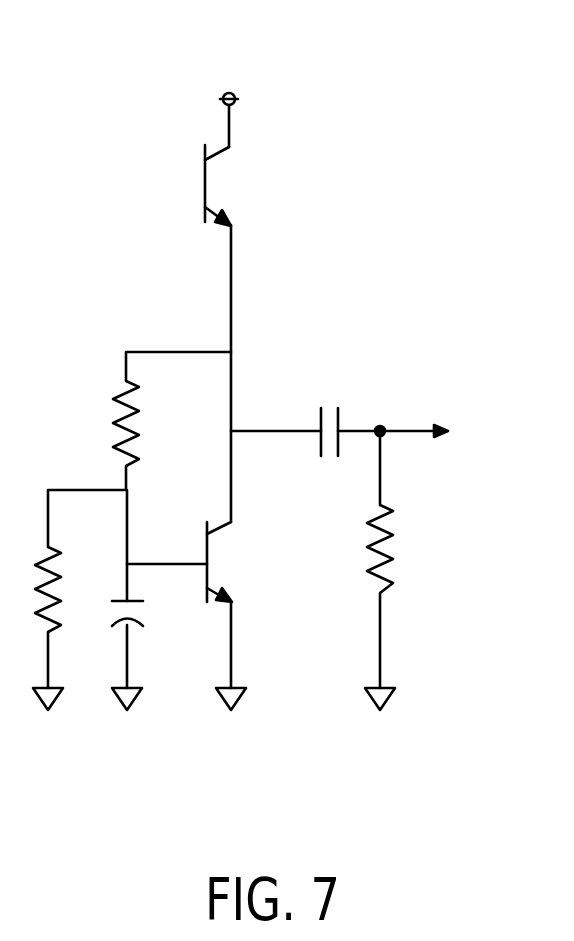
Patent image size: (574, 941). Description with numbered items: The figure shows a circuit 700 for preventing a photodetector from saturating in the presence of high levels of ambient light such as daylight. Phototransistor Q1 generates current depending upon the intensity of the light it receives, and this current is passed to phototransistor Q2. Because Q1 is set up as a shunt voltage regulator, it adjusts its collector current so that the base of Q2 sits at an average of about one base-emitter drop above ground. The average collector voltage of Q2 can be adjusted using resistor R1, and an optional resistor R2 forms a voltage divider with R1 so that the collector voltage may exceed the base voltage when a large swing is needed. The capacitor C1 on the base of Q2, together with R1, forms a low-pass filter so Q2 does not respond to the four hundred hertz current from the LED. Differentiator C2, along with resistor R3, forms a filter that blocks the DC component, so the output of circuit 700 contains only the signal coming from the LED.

The circuit 700 is at (264, 355).
The phototransistor Q1 is at (244, 185).
The phototransistor Q2 is at (243, 568).
The resistor R1 is at (148, 423).
The resistor R2 is at (71, 589).
The resistor R3 is at (407, 549).
The capacitor C1 is at (150, 620).
The differentiator C2 is at (332, 413).